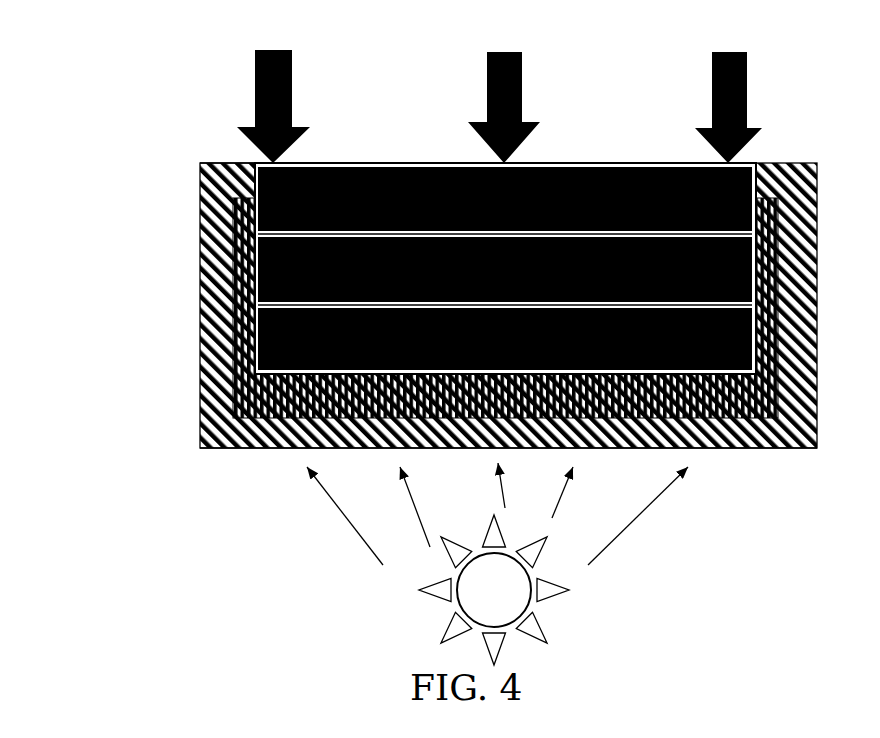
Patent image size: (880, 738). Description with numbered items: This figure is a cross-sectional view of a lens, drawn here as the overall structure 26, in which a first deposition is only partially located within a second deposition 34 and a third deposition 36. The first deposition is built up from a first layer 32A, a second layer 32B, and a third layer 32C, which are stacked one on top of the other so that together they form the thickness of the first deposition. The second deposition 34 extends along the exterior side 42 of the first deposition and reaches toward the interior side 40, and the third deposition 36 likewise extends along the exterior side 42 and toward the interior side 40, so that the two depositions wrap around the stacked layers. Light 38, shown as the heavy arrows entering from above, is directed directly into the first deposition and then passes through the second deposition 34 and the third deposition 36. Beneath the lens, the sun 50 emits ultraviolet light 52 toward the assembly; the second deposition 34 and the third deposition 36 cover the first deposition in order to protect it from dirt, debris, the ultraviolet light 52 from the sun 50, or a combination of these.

The thermal energy storage assembly 26 is at (446, 283).
The first layer 32A is at (258, 333).
The second layer 32B is at (258, 270).
The third layer 32C is at (343, 163).
The second deposition 34 is at (765, 163).
The third deposition 36 is at (221, 380).
The light 38 is at (253, 107).
The interior side 40 is at (213, 163).
The exterior side 42 is at (268, 447).
The sun 50 is at (596, 583).
The ultraviolet light 52 is at (686, 508).